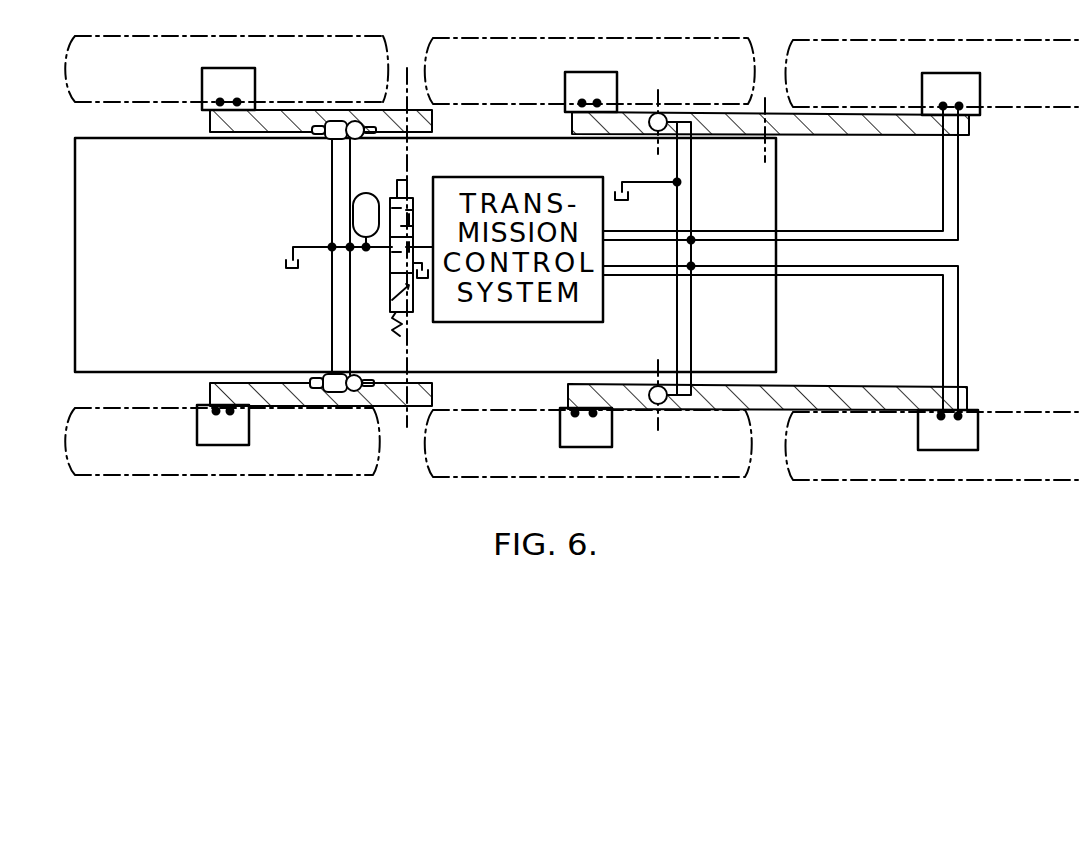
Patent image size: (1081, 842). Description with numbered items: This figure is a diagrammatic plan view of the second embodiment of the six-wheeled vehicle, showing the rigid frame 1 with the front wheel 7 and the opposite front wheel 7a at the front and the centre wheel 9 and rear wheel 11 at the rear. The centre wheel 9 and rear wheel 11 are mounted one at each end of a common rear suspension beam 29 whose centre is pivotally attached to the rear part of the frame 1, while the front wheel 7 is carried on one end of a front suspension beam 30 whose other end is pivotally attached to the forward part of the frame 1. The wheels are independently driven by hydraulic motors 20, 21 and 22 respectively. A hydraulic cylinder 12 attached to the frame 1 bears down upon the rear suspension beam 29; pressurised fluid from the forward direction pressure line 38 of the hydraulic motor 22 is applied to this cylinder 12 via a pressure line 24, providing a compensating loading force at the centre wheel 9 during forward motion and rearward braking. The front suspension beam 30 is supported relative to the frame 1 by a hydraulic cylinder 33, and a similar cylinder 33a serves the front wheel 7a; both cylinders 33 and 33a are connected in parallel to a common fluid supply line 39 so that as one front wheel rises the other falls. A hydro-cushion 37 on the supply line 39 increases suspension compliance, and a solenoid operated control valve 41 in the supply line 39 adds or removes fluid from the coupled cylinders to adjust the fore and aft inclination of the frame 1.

The frame 1 is at (116, 197).
The front wheel 7 is at (313, 470).
The front wheel 7a is at (83, 82).
The centre wheel 9 is at (713, 472).
The rear wheel 11 is at (803, 474).
The hydraulic cylinder 12 is at (656, 406).
The hydraulic motor 20 is at (219, 438).
The hydraulic motor 21 is at (568, 440).
The hydraulic motor 22 is at (953, 443).
The pressure line 24 is at (692, 297).
The rear suspension beam 29 is at (567, 396).
The front suspension beam 30 is at (210, 391).
The hydraulic cylinder 33 is at (325, 375).
The hydraulic cylinder 33a is at (332, 141).
The hydro-cushion 37 is at (366, 193).
The forward direction pressure line 38 is at (958, 313).
The fluid supply line 39 is at (378, 250).
The solenoid operated control valve 41 is at (392, 318).